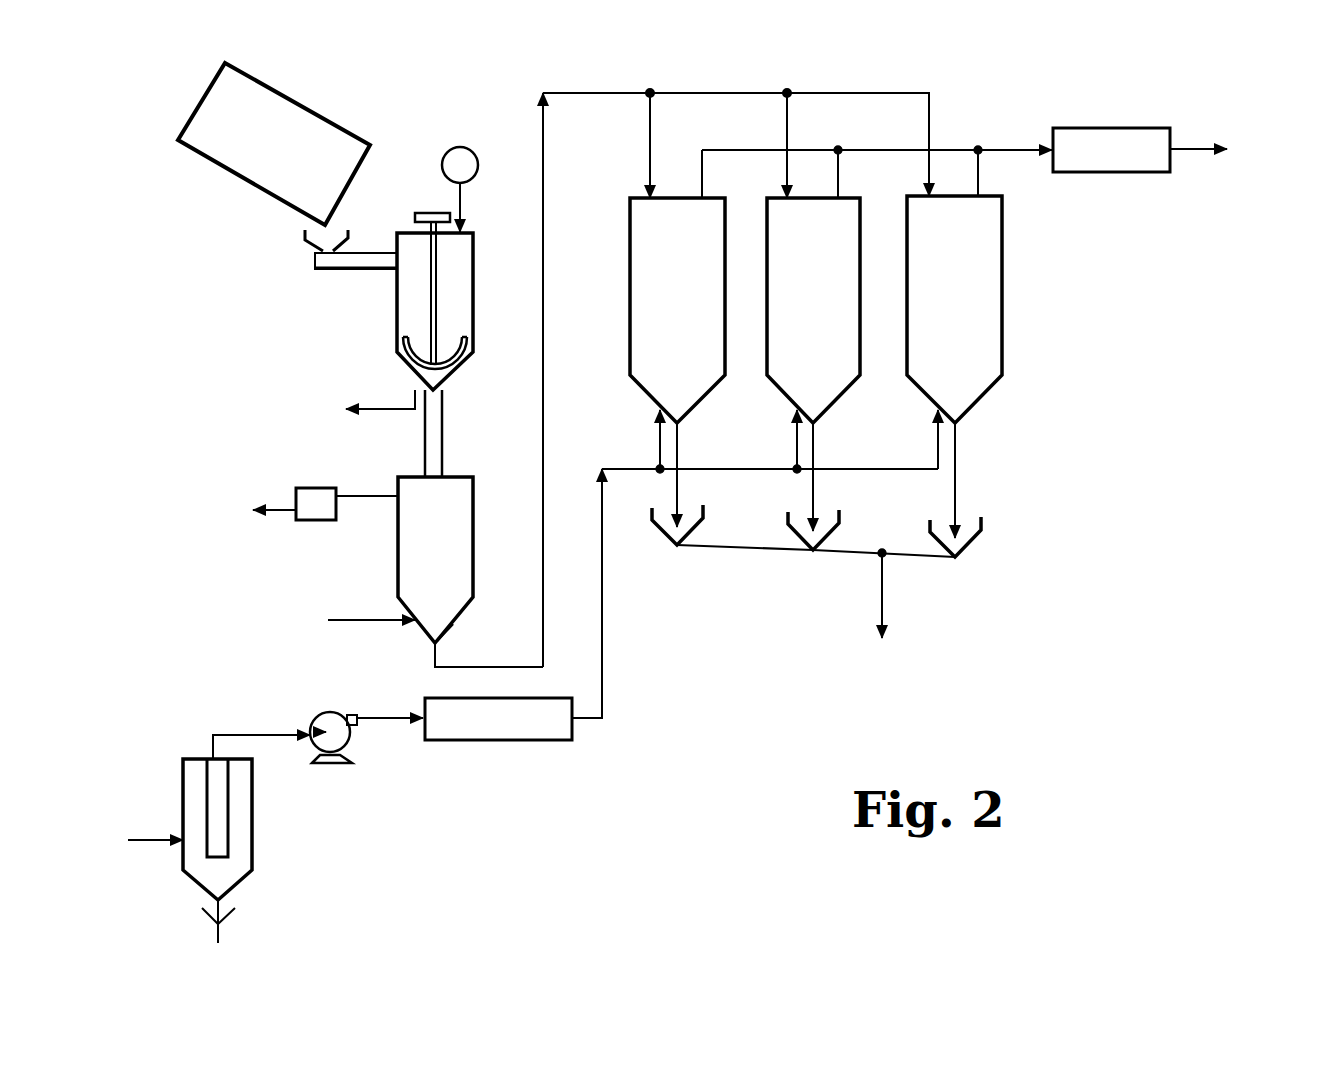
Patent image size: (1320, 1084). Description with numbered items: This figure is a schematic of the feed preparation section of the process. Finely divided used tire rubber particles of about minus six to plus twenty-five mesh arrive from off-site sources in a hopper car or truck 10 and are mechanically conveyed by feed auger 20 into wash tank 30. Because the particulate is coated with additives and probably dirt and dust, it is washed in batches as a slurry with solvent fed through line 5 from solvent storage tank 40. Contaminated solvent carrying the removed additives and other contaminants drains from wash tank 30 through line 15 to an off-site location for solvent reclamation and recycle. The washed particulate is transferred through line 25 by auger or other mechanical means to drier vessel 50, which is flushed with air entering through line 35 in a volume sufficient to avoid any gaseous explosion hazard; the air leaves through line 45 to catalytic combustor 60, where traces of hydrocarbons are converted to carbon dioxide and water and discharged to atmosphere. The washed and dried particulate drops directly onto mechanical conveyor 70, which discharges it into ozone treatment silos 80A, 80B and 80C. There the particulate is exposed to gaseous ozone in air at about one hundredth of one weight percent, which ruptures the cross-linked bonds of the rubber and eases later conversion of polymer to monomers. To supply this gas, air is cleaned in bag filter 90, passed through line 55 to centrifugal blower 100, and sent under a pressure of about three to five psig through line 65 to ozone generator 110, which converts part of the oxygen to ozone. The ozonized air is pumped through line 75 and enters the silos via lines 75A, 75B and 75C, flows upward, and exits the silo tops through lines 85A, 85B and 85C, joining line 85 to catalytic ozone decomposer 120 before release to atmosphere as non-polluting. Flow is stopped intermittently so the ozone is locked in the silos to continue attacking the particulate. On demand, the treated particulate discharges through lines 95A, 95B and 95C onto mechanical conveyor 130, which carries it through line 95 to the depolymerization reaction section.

The line 5 is at (463, 210).
The hopper car or truck 10 is at (247, 181).
The line 15 is at (392, 407).
The feed auger 20 is at (366, 252).
The line 25 is at (445, 445).
The wash tank 30 is at (475, 278).
The line 35 is at (372, 617).
The solvent storage tank 40 is at (473, 153).
The line 45 is at (373, 493).
The drier vessel 50 is at (475, 538).
The line 55 is at (250, 733).
The catalytic combustor 60 is at (325, 521).
The line 65 is at (378, 718).
The mechanical conveyor 70 is at (500, 665).
The line 75 is at (603, 640).
The line 75A is at (660, 453).
The line 75B is at (797, 453).
The line 75C is at (938, 453).
The ozone treatment silo 80A is at (630, 302).
The ozone treatment silo 80B is at (836, 296).
The ozone treatment silo 80C is at (1003, 292).
The line 85 is at (823, 148).
The line 85A is at (702, 186).
The line 85B is at (838, 186).
The line 85C is at (978, 188).
The bag filter 90 is at (240, 877).
The line 95 is at (883, 598).
The line 95A is at (677, 482).
The line 95B is at (813, 485).
The line 95C is at (955, 497).
The blower 100 is at (350, 747).
The ozone generator 110 is at (532, 742).
The catalytic ozone decomposer 120 is at (1122, 128).
The mechanical conveyor 130 is at (790, 552).